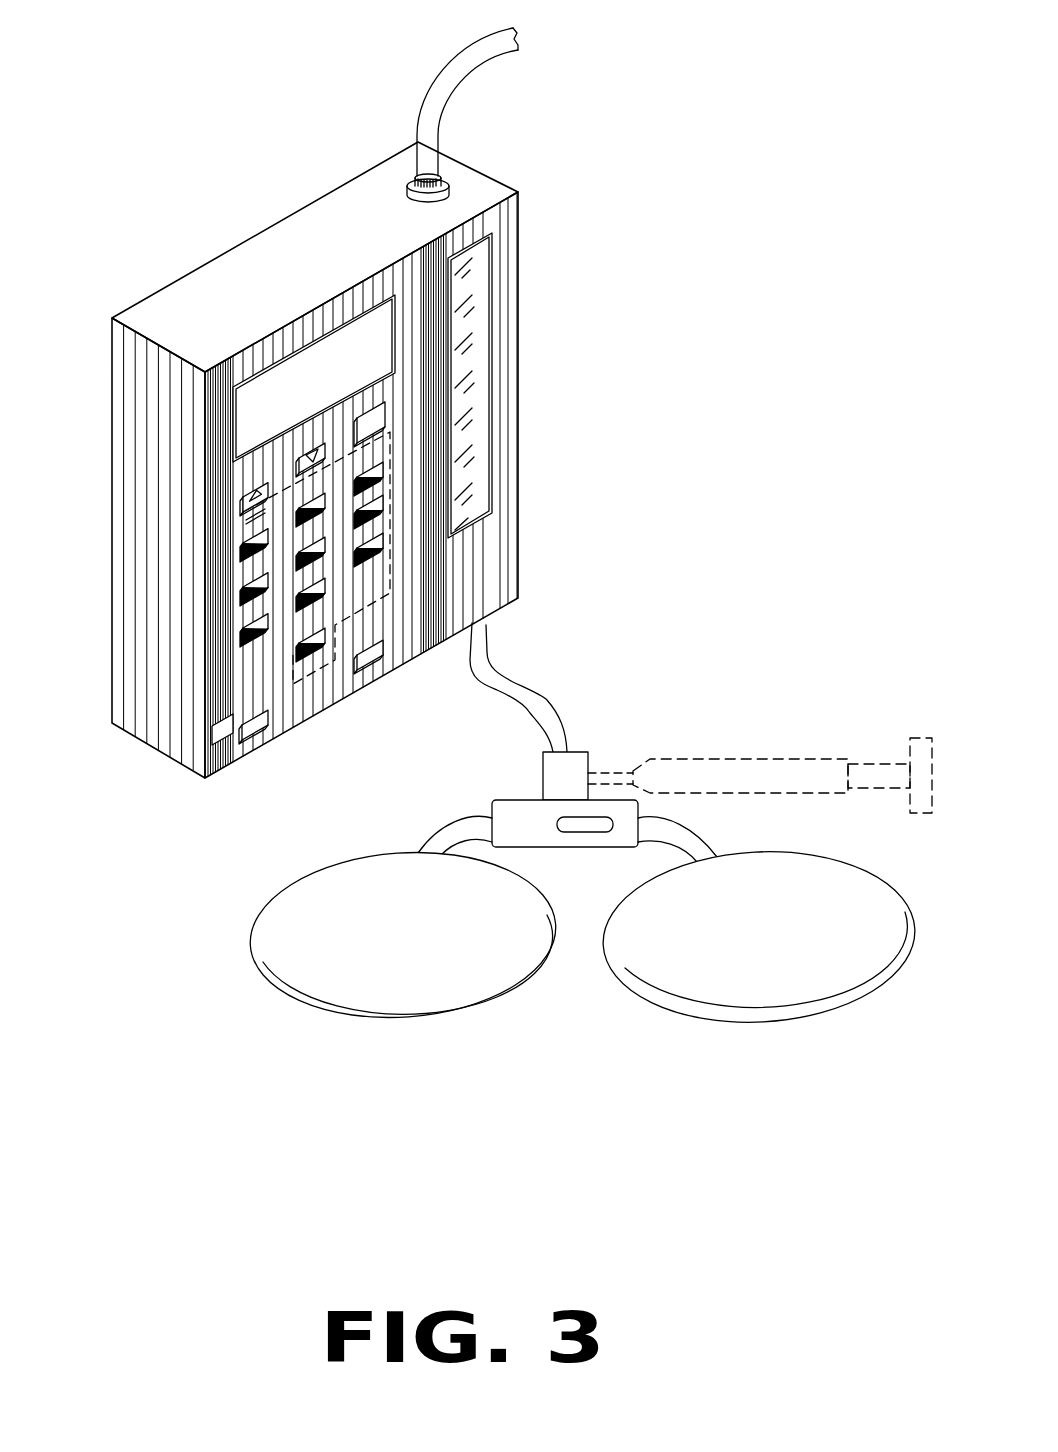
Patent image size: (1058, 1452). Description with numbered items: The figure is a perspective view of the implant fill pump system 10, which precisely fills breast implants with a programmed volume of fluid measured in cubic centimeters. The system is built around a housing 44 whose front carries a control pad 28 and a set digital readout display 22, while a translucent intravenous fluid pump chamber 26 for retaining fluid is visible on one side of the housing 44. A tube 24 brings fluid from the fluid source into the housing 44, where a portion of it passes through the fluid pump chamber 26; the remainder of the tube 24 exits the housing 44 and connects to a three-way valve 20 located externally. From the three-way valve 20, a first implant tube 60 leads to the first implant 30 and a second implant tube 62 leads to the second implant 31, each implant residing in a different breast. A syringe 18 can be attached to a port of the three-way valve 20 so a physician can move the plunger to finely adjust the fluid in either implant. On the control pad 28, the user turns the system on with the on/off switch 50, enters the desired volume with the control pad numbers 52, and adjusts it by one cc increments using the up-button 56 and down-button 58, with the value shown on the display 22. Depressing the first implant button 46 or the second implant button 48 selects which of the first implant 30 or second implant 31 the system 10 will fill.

The implant fill pump system 10 is at (668, 234).
The syringe 18 is at (783, 758).
The three-way valve 20 is at (588, 757).
The display 22 is at (273, 380).
The tube 24 is at (523, 30).
The fluid pump chamber 26 is at (478, 397).
The control pad 28 is at (335, 587).
The first implant 30 is at (440, 988).
The second implant 31 is at (845, 970).
The housing 44 is at (195, 270).
The first implant button 46 is at (262, 718).
The second implant button 48 is at (380, 658).
The on/off switch 50 is at (372, 423).
The control pad numbers 52 is at (242, 663).
The up-button 56 is at (268, 492).
The down-button 58 is at (303, 455).
The first implant tube 60 is at (440, 820).
The second implant tube 62 is at (697, 828).